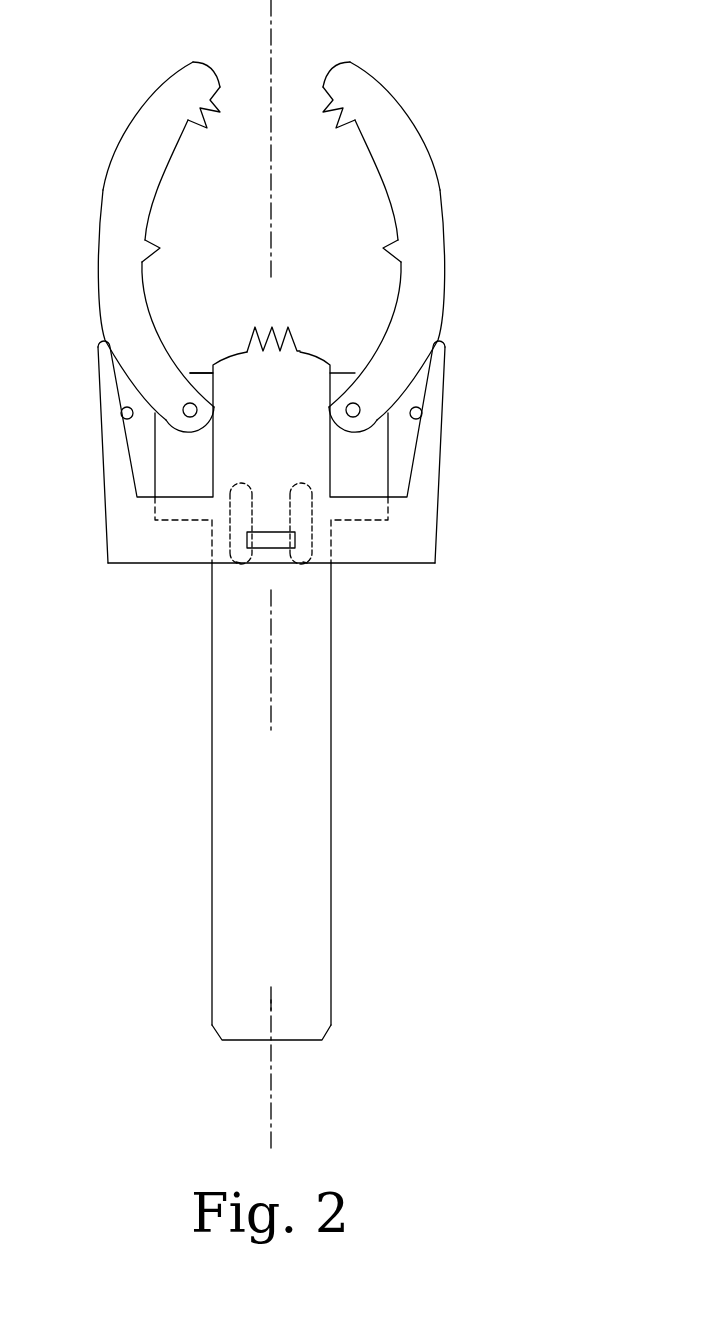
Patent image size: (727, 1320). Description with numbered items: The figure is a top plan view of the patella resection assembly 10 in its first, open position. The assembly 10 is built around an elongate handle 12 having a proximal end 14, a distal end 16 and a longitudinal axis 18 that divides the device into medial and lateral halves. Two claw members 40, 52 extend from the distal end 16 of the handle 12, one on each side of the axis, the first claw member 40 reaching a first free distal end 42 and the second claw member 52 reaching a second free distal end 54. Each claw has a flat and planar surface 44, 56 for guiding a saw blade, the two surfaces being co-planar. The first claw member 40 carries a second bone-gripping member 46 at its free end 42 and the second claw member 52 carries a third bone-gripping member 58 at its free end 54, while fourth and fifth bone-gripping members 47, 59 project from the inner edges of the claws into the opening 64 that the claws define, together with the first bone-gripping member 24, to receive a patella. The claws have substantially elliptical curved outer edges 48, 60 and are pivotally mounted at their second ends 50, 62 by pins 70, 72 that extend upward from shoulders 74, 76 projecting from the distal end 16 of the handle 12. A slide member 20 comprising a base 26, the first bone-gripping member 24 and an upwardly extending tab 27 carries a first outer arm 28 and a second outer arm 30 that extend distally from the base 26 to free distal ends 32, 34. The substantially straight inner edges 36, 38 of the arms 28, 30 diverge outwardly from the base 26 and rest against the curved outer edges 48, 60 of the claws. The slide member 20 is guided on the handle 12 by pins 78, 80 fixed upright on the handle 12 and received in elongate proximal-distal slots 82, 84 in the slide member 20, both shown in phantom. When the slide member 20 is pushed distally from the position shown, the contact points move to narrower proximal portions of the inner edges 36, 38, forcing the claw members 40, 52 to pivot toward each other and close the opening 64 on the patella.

The patella resection assembly 10 is at (212, 722).
The handle 12 is at (316, 826).
The proximal end 14 is at (242, 1042).
The distal end 16 is at (197, 372).
The longitudinal axis 18 is at (272, 883).
The slide member 20 is at (133, 565).
The first bone-gripping member 24 is at (289, 328).
The base 26 is at (188, 556).
The tab 27 is at (272, 532).
The first outer arm 28 is at (115, 497).
The second outer arm 30 is at (428, 497).
The free distal end 32 is at (102, 340).
The free distal end 34 is at (441, 340).
The inner edge 36 is at (121, 413).
The inner edge 38 is at (422, 413).
The first claw member 40 is at (140, 182).
The first free distal end 42 is at (195, 60).
The flat and planar surface 44 is at (156, 152).
The second bone-gripping member 46 is at (207, 128).
The fourth bone-gripping member 47 is at (160, 248).
The curved outer edge 48 is at (97, 237).
The second end 50 is at (213, 405).
The second claw member 52 is at (403, 182).
The second free distal end 54 is at (348, 60).
The flat and planar surface 56 is at (410, 152).
The third bone-gripping member 58 is at (336, 128).
The fifth bone-gripping member 59 is at (383, 248).
The curved outer edge 60 is at (443, 190).
The second end 62 is at (330, 405).
The opening 64 is at (244, 212).
The pin 70 is at (184, 404).
The pin 72 is at (359, 404).
The shoulder 74 is at (196, 474).
The shoulder 76 is at (370, 474).
The pin 78 is at (237, 470).
The pin 80 is at (306, 470).
The slot 82 is at (235, 563).
The slot 84 is at (307, 563).